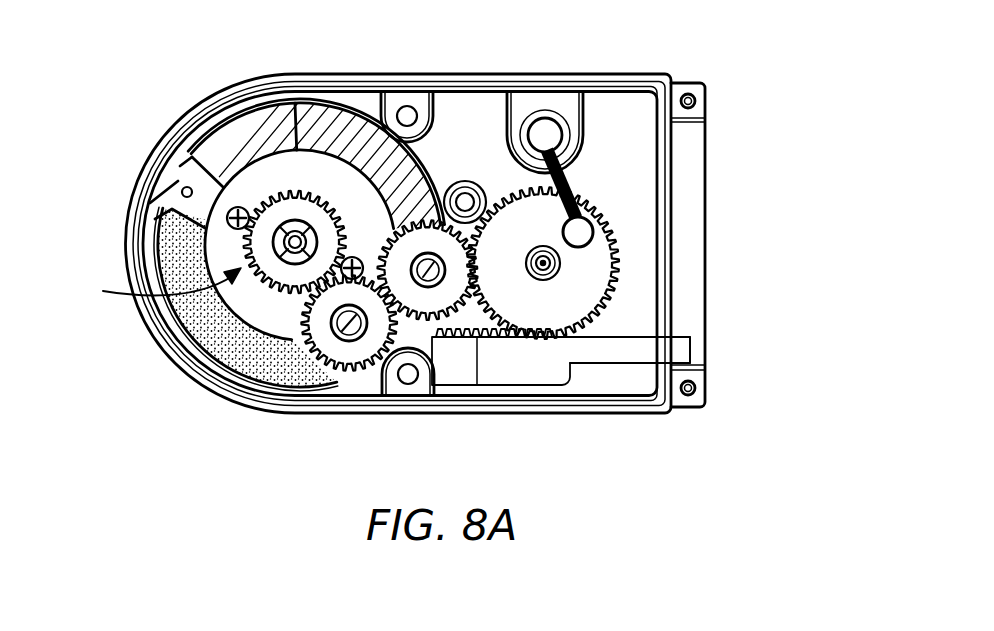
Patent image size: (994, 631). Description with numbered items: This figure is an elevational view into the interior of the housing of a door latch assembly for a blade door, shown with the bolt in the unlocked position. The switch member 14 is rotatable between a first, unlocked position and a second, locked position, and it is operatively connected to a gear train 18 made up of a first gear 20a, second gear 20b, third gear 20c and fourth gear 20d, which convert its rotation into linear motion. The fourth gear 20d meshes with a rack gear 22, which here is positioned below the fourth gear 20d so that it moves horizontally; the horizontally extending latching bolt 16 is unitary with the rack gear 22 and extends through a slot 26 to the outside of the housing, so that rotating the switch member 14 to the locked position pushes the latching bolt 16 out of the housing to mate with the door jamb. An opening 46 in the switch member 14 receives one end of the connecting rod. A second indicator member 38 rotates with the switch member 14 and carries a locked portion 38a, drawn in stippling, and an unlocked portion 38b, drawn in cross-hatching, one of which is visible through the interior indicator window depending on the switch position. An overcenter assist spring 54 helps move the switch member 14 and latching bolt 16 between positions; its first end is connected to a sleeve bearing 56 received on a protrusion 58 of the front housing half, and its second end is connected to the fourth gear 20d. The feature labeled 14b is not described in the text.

The switch member 14 is at (227, 252).
The drum notch 14b is at (173, 200).
The latching bolt 16 is at (670, 350).
The gear train 18 is at (157, 288).
The first gear 20a is at (297, 192).
The second gear 20b is at (352, 338).
The third gear 20c is at (445, 298).
The fourth gear 20d is at (556, 298).
The rack gear 22 is at (505, 335).
The slot 26 is at (688, 186).
The second indicator member 38 is at (445, 206).
The locked portion 38a is at (215, 333).
The unlocked portion 38b is at (275, 120).
The opening 46 is at (184, 188).
The overcenter assist spring 54 is at (586, 196).
The sleeve bearing 56 is at (552, 140).
The protrusion 58 is at (543, 133).